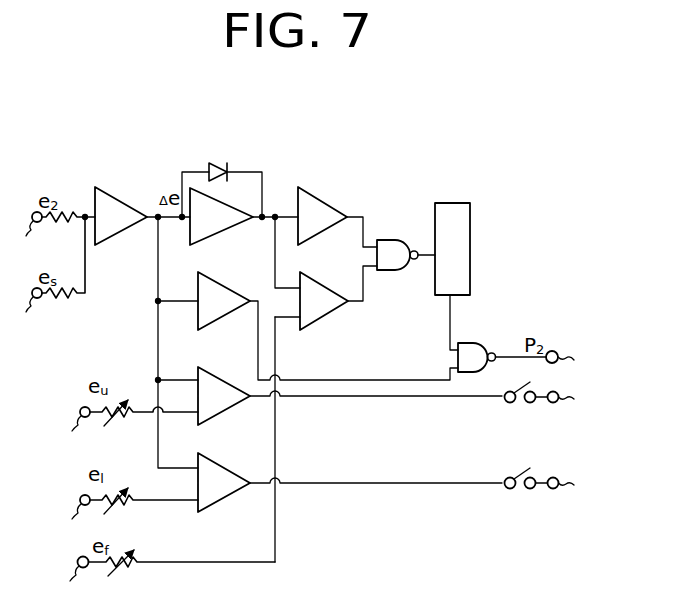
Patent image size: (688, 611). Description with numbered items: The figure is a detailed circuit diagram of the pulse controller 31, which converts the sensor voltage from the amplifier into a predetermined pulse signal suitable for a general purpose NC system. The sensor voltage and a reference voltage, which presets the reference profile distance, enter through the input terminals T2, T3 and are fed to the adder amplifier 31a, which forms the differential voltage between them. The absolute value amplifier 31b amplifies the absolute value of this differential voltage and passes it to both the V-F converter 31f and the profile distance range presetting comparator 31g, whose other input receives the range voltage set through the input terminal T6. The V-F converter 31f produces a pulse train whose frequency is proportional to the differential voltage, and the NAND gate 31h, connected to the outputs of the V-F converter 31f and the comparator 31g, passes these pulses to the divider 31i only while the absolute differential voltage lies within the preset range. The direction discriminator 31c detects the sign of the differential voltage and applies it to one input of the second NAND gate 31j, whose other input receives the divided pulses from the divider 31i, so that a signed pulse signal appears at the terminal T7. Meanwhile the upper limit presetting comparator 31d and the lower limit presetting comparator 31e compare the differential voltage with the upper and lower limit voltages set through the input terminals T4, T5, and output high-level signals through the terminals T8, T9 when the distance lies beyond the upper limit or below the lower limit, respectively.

The pulse controller 31 is at (379, 171).
The adder amplifier 31a is at (108, 187).
The absolute value amplifier 31b is at (270, 177).
The direction discriminator 31c is at (209, 280).
The upper limit presetting comparator 31d is at (203, 372).
The lower limit presetting comparator 31e is at (218, 470).
The V-F converter 31f is at (326, 188).
The profile distance range presetting comparator 31g is at (312, 280).
The NAND gate 31h is at (388, 240).
The divider 31i is at (470, 228).
The NAND gate 31j is at (474, 343).
The input terminal T2 is at (25, 231).
The input terminal T3 is at (25, 307).
The input terminal T4 is at (76, 428).
The input terminal T5 is at (76, 516).
The input terminal T6 is at (74, 578).
The terminal T7 is at (571, 360).
The terminal T8 is at (551, 395).
The terminal T9 is at (551, 481).